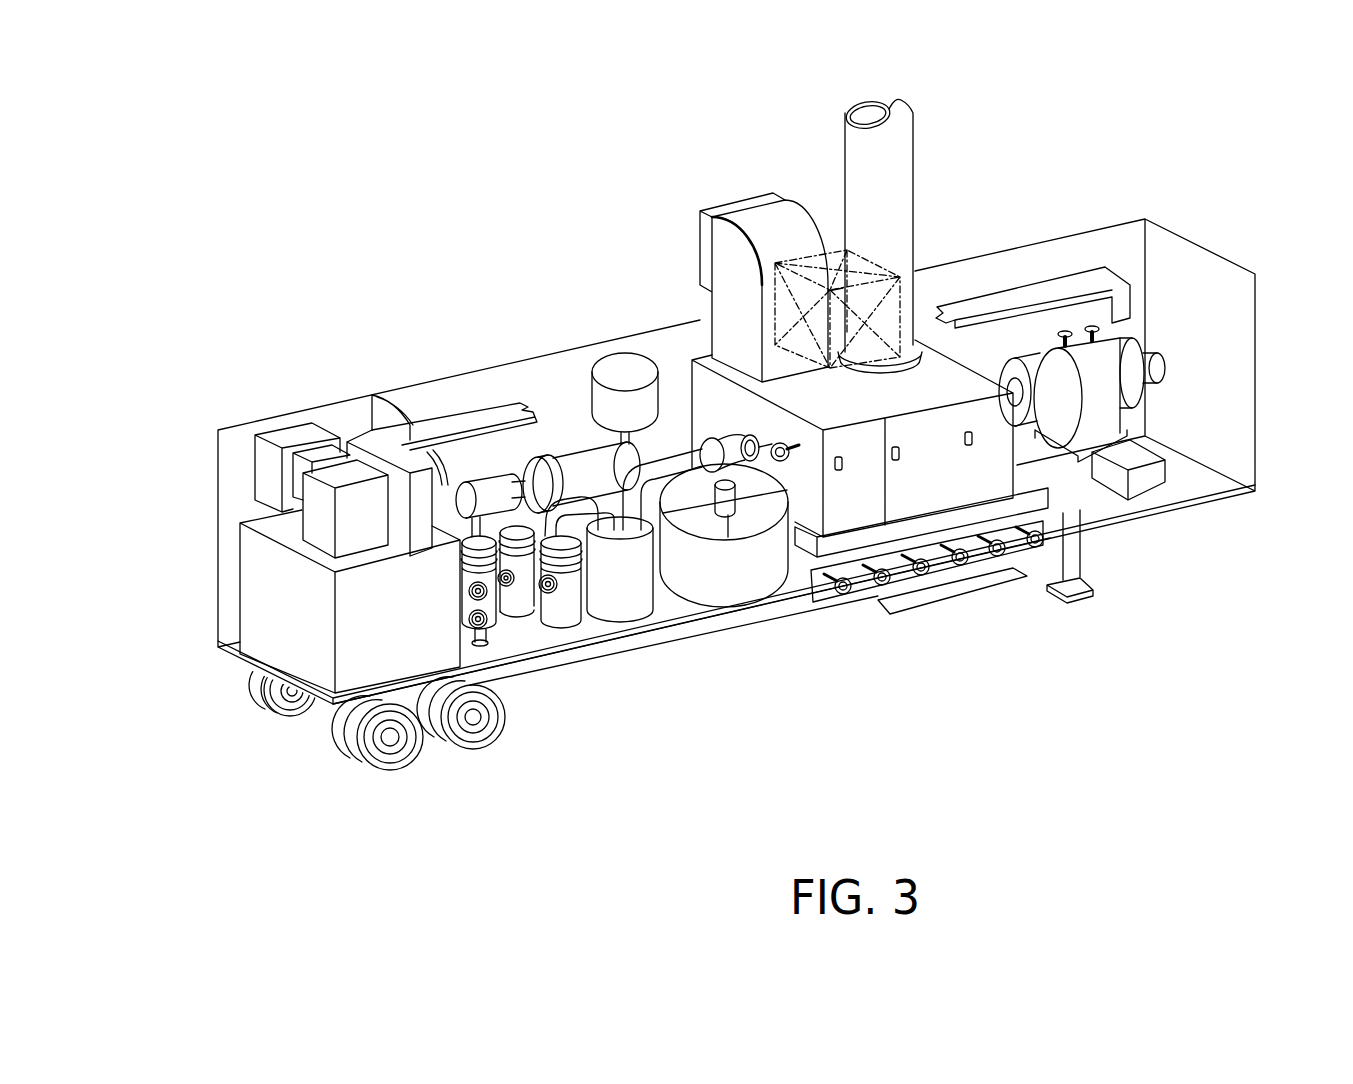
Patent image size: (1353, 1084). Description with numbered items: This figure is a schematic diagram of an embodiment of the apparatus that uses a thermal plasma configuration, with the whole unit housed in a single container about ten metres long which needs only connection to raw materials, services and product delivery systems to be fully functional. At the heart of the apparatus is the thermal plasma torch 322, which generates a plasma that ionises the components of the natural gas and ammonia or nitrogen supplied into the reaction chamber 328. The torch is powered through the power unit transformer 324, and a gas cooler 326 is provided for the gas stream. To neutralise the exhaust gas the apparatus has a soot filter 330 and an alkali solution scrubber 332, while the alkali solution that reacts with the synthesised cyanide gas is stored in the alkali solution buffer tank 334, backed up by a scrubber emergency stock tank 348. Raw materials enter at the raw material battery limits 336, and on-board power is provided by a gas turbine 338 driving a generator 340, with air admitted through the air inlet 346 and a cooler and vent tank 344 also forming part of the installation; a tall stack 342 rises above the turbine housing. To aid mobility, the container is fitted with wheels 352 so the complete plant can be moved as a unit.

The thermal plasma torch 322 is at (580, 472).
The power unit transformer 324 is at (277, 622).
The gas cooler 326 is at (493, 503).
The reaction chamber 328 is at (566, 605).
The soot filter 330 is at (623, 590).
The alkali solution scrubber 332 is at (575, 607).
The alkali solution buffer tank 334 is at (755, 580).
The raw material battery limits 336 is at (948, 604).
The gas turbine 338 is at (932, 468).
The generator 340 is at (1090, 378).
The exhaust stack 342 is at (915, 188).
The cooler and vent tank 344 is at (837, 253).
The air inlet 346 is at (740, 197).
The scrubber emergency stock tank 348 is at (618, 372).
The wheels 352 is at (458, 755).